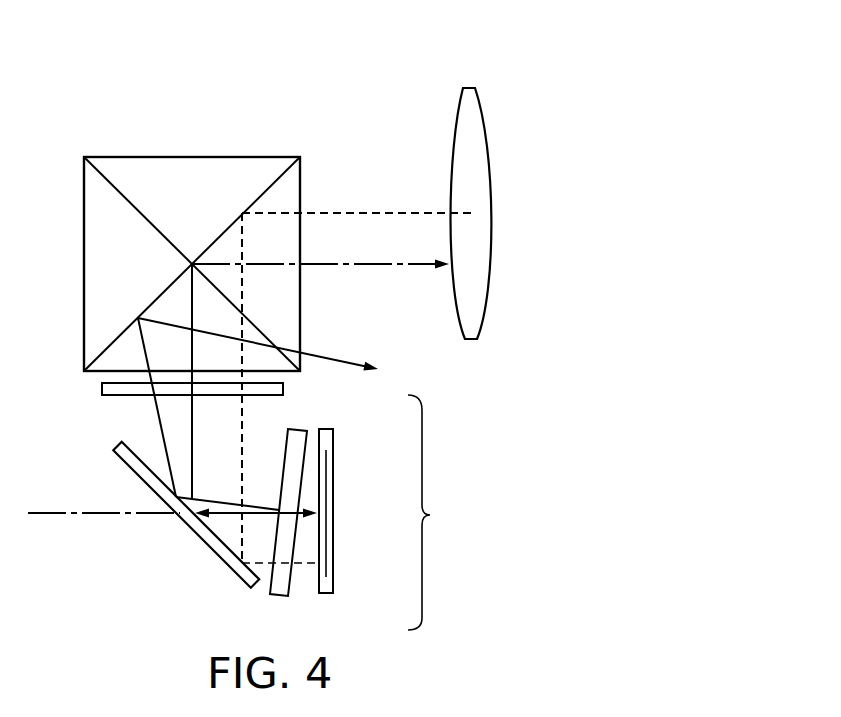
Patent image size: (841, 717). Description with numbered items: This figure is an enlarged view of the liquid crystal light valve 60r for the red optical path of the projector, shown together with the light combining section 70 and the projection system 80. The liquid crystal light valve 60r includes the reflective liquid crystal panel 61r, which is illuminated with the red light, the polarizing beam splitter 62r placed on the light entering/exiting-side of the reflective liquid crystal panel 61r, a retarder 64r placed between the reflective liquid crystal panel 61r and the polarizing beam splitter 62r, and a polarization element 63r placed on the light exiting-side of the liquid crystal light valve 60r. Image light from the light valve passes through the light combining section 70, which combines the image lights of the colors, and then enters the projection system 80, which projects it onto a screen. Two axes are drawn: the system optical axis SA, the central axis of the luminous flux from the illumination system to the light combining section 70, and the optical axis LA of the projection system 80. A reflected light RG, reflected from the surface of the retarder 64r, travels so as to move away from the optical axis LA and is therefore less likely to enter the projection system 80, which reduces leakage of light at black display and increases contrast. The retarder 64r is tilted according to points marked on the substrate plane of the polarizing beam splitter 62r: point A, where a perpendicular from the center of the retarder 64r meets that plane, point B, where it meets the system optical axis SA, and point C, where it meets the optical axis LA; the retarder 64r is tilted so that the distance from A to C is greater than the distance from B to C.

The light combining section 70 is at (232, 156).
The projection system 80 is at (468, 88).
The liquid crystal light valve for color R 60r is at (289, 508).
The reflective liquid crystal panel 61r is at (333, 478).
The polarizing beam splitter 62r is at (258, 585).
The polarization element 63r is at (283, 389).
The retarder 64r is at (288, 578).
The optical axis of the projection system LA is at (345, 212).
The system optical axis SA is at (403, 266).
The reflected light RG is at (343, 362).
The point A is at (175, 495).
The point B is at (194, 502).
The point C is at (243, 557).